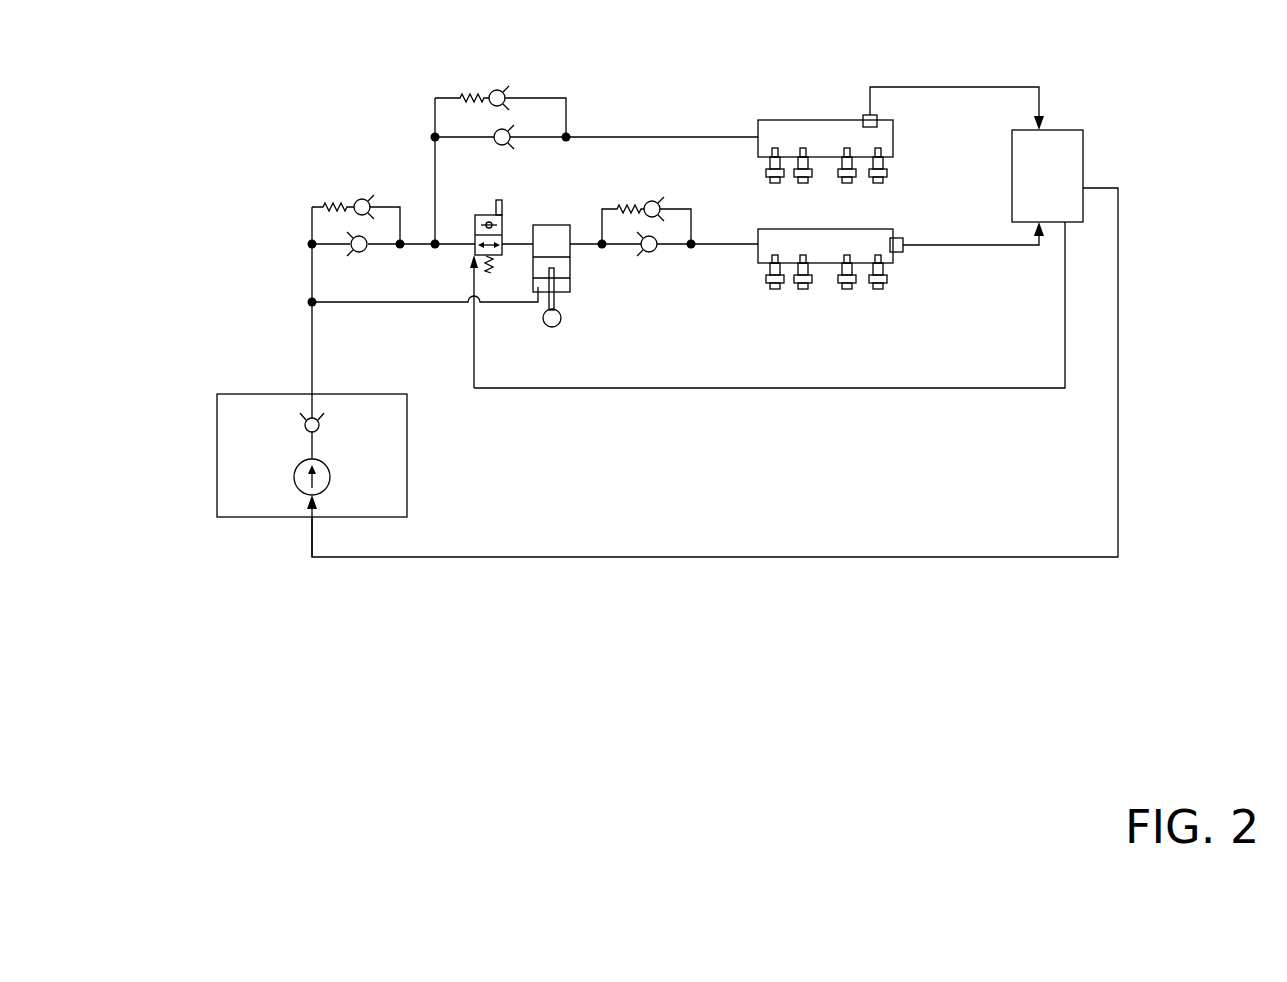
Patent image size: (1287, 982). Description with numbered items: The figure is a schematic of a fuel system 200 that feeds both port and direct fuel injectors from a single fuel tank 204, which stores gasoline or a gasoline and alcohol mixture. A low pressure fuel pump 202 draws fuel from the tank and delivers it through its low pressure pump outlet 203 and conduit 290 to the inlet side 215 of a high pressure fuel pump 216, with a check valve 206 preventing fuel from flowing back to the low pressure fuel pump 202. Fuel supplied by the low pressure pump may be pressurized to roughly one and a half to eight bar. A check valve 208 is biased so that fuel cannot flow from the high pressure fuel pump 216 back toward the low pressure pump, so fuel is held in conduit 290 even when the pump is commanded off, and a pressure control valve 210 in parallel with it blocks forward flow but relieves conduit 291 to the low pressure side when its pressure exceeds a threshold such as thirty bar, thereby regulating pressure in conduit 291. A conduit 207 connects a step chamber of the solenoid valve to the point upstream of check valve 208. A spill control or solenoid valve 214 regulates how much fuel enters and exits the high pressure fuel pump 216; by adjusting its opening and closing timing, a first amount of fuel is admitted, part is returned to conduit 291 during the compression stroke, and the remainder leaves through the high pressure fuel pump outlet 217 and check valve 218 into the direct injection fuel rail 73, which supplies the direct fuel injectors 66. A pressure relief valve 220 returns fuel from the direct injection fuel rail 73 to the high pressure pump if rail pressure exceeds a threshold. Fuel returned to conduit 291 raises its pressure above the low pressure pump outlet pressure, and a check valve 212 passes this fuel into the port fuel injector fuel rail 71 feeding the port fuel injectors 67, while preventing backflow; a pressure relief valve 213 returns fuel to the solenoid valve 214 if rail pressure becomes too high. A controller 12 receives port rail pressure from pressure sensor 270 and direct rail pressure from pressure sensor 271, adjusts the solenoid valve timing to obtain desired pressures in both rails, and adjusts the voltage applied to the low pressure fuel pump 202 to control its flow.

The fuel system 200 is at (234, 74).
The low pressure fuel pump 202 is at (330, 481).
The low pressure pump outlet 203 is at (312, 455).
The fuel tank 204 is at (407, 433).
The check valve 206 is at (318, 431).
The conduit 207 is at (400, 303).
The check valve 208 is at (366, 252).
The pressure control valve 210 is at (370, 199).
The check valve 212 is at (498, 146).
The pressure relief valve 213 is at (500, 89).
The solenoid valve 214 is at (504, 220).
The inlet side 215 is at (532, 247).
The high pressure fuel pump 216 is at (561, 322).
The high pressure fuel pump outlet 217 is at (578, 244).
The check valve 218 is at (641, 253).
The pressure relief valve 220 is at (659, 200).
The pressure sensor 270 is at (864, 115).
The pressure sensor 271 is at (904, 240).
The conduit 290 is at (312, 308).
The conduit 291 is at (424, 243).
The port fuel injector fuel rail 71 is at (825, 138).
The direct injection fuel rail 73 is at (825, 246).
The direct fuel injectors 66 is at (778, 289).
The port fuel injectors 67 is at (778, 183).
The controller 12 is at (715, 343).